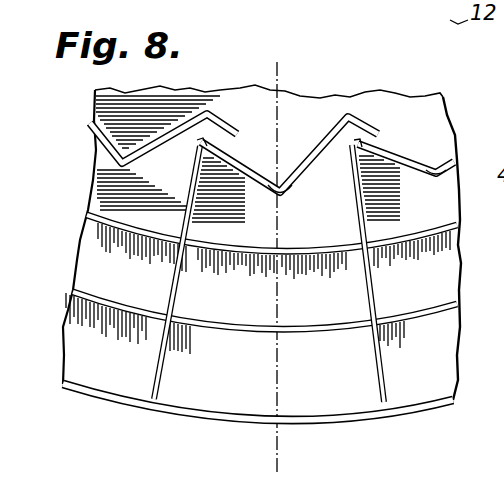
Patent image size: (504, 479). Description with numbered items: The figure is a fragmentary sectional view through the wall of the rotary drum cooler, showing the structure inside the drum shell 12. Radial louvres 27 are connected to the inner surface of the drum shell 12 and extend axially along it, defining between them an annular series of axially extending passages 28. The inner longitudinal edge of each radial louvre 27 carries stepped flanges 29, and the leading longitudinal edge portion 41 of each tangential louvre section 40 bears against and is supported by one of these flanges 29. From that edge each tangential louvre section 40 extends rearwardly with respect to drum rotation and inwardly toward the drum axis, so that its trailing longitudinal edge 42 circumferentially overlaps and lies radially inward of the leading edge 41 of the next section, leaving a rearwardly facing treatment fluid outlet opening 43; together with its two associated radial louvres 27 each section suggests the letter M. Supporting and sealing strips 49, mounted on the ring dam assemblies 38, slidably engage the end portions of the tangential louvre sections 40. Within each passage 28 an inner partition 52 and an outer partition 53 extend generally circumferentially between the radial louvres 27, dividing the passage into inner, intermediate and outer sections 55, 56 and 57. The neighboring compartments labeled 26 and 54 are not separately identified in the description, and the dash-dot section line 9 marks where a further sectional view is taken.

The section line 9- 9 is at (272, 61).
The drum shell 12 is at (370, 417).
The center panel 26 is at (327, 305).
The radial louvre 27 is at (173, 280).
The axially extending passage 28 is at (440, 280).
The stepped flange 29 is at (208, 162).
The ring dam assembly 38 is at (318, 97).
The tangential louvre section 40 is at (330, 132).
The leading longitudinal edge portion 41 is at (213, 148).
The trailing longitudinal edge 42 is at (228, 124).
The treatment fluid outlet opening 43 is at (228, 143).
The supporting and sealing strip 49 is at (287, 195).
The inner partition 52 is at (458, 207).
The outer partition 53 is at (137, 222).
The lower left panel 54 is at (110, 315).
The inner section 55 is at (253, 233).
The intermediate section 56 is at (247, 310).
The outer section 57 is at (247, 380).